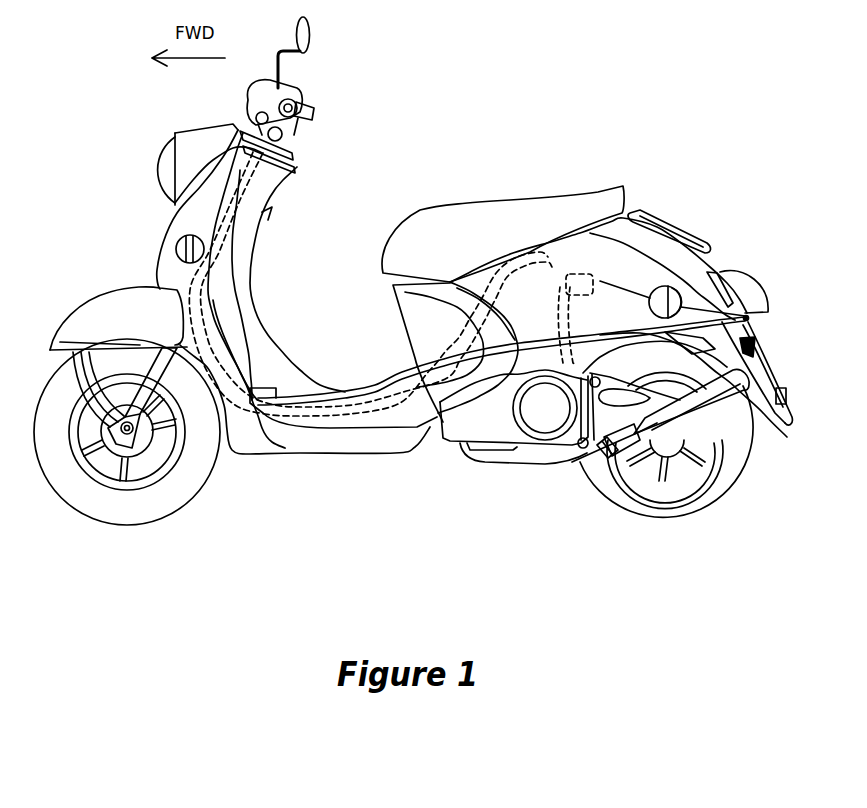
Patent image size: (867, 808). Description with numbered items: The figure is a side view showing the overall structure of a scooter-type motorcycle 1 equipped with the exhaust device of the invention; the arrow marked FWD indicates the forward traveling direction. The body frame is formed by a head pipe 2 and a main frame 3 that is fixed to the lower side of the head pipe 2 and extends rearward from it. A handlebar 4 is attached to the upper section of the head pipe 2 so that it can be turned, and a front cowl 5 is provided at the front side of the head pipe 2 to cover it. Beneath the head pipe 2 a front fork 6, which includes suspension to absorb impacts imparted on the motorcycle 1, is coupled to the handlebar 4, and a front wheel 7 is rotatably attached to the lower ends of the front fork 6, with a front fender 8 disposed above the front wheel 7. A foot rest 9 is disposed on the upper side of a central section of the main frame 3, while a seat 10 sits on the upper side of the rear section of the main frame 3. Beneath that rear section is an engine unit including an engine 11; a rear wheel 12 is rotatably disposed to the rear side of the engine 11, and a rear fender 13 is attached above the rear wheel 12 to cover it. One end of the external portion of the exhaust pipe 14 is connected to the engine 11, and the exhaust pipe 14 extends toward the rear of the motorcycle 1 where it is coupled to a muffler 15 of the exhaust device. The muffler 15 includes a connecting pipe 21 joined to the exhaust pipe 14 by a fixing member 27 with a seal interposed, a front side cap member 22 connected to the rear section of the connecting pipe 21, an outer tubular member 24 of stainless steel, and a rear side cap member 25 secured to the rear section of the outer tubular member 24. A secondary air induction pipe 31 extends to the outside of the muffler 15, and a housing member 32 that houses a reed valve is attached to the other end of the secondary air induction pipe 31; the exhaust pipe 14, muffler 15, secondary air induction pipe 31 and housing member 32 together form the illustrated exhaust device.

The motorcycle 1 is at (118, 109).
The head pipe 2 is at (215, 237).
The main frame 3 is at (362, 410).
The handlebar 4 is at (300, 98).
The front cowl 5 is at (222, 185).
The front fork 6 is at (158, 367).
The front wheel 7 is at (128, 510).
The front fender 8 is at (85, 322).
The foot rest 9 is at (332, 393).
The seat 10 is at (539, 215).
The engine 11 is at (548, 423).
The rear wheel 12 is at (660, 505).
The rear fender 13 is at (742, 328).
The exhaust pipe 14 is at (495, 462).
The muffler 15 is at (741, 421).
The connecting pipe 21 is at (618, 463).
The front side cap member 22 is at (637, 460).
The outer tubular member 24 is at (680, 430).
The rear side cap member 25 is at (750, 392).
The fixing member 27 is at (600, 455).
The secondary air induction pipe 31 is at (566, 300).
The housing member 32 is at (582, 273).